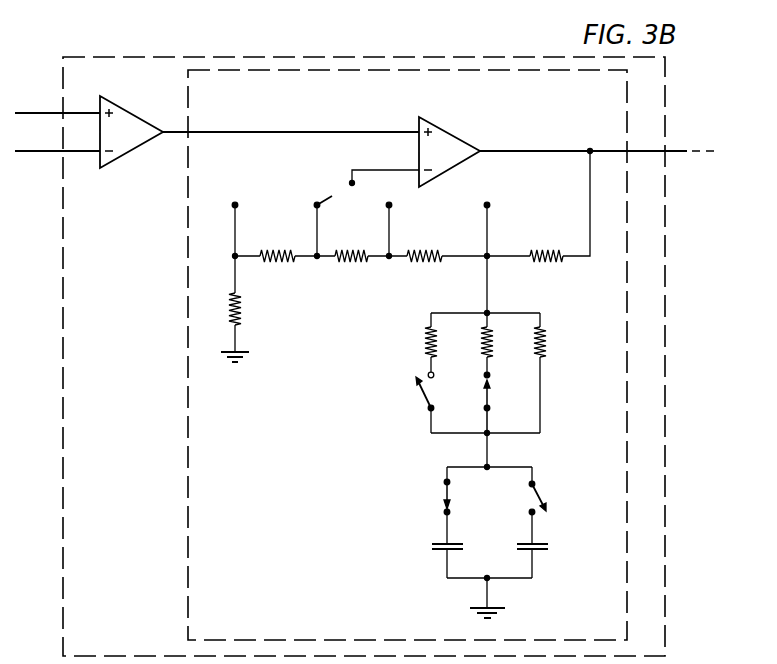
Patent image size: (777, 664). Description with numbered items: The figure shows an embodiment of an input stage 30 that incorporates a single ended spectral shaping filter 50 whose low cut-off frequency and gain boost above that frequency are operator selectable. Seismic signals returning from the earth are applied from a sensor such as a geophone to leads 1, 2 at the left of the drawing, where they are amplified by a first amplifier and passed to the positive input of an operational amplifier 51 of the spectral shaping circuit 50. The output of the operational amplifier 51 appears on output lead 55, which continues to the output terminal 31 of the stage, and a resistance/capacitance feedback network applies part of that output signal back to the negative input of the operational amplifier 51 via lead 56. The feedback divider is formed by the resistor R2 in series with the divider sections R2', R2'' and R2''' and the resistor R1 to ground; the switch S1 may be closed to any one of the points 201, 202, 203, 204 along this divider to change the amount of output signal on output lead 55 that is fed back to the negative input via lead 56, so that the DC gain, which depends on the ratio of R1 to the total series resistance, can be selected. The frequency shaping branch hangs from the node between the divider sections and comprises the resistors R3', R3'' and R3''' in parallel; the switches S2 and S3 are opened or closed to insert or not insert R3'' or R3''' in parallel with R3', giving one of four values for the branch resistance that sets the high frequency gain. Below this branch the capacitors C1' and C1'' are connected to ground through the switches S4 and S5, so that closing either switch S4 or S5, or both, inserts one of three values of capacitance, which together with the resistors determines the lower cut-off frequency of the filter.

The lead 1 is at (29, 113).
The lead 2 is at (25, 152).
The input stage 30 is at (665, 435).
The output terminal 31 is at (681, 150).
The spectral shaping circuit 50 is at (627, 388).
The operational amplifier 51 is at (445, 128).
The output lead 55 is at (553, 150).
The lead 56 is at (351, 168).
The point 201 is at (488, 204).
The point 202 is at (390, 206).
The point 203 is at (316, 204).
The point 204 is at (234, 204).
The resistor R1 is at (243, 309).
The resistor R2 is at (546, 272).
The resistor R2' is at (277, 272).
The resistor R2'' is at (354, 272).
The resistor R2''' is at (427, 272).
The resistor R3' is at (554, 342).
The resistor R3'' is at (503, 351).
The resistor R3''' is at (411, 349).
The switch S1 is at (336, 197).
The switch S2 is at (499, 402).
The switch S3 is at (414, 402).
The switch S4 is at (549, 498).
The switch S5 is at (434, 497).
The capacitor C1' is at (547, 545).
The capacitor C1'' is at (431, 545).